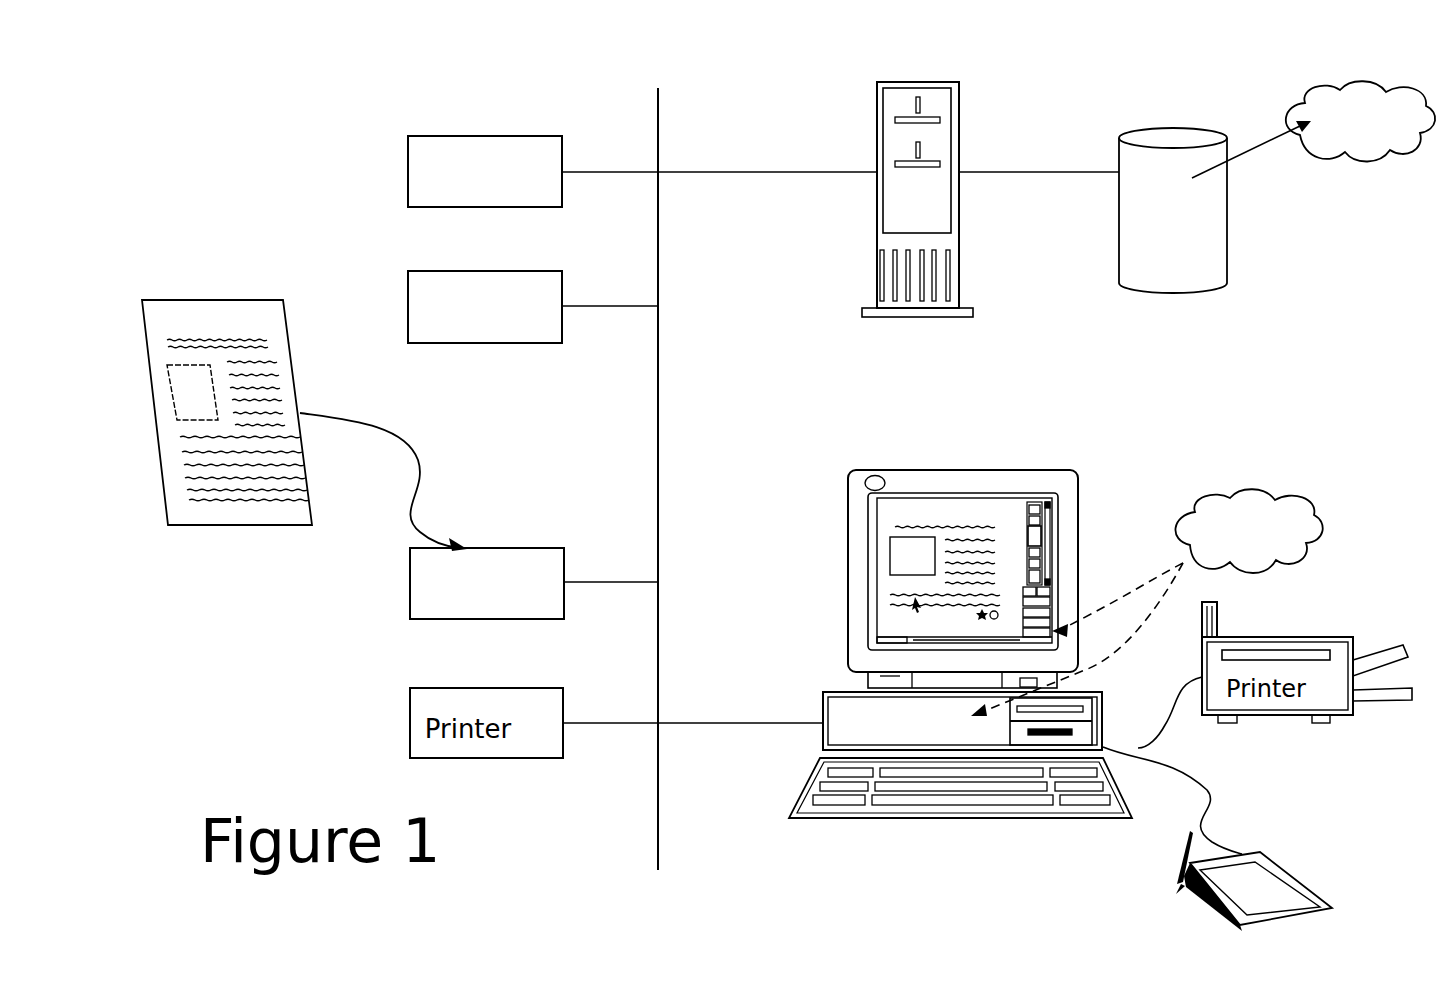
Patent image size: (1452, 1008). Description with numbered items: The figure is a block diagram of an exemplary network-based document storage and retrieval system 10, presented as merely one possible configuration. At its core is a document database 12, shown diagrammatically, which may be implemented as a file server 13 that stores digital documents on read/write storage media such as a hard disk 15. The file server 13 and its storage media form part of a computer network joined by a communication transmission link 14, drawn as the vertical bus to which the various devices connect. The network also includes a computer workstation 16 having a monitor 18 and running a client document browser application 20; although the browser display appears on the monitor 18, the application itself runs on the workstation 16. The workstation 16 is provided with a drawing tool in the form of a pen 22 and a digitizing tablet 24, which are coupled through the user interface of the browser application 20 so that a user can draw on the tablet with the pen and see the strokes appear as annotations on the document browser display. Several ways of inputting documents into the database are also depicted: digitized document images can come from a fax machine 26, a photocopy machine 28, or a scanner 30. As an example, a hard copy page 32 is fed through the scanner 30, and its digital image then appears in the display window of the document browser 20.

The network-based document storage and retrieval system 10 is at (619, 80).
The document database 12 is at (1362, 138).
The file server 13 is at (907, 310).
The communication transmission link 14 is at (659, 240).
The hard disk 15 is at (1205, 273).
The workstation 16 is at (840, 733).
The monitor 18 is at (984, 504).
The client document browser application 20 is at (1257, 547).
The pen 22 is at (1178, 845).
The digitizing tablet 24 is at (1302, 895).
The fax machine 26 is at (427, 165).
The photocopy machine 28 is at (459, 287).
The scanner 30 is at (518, 561).
The hard copy page 32 is at (242, 513).